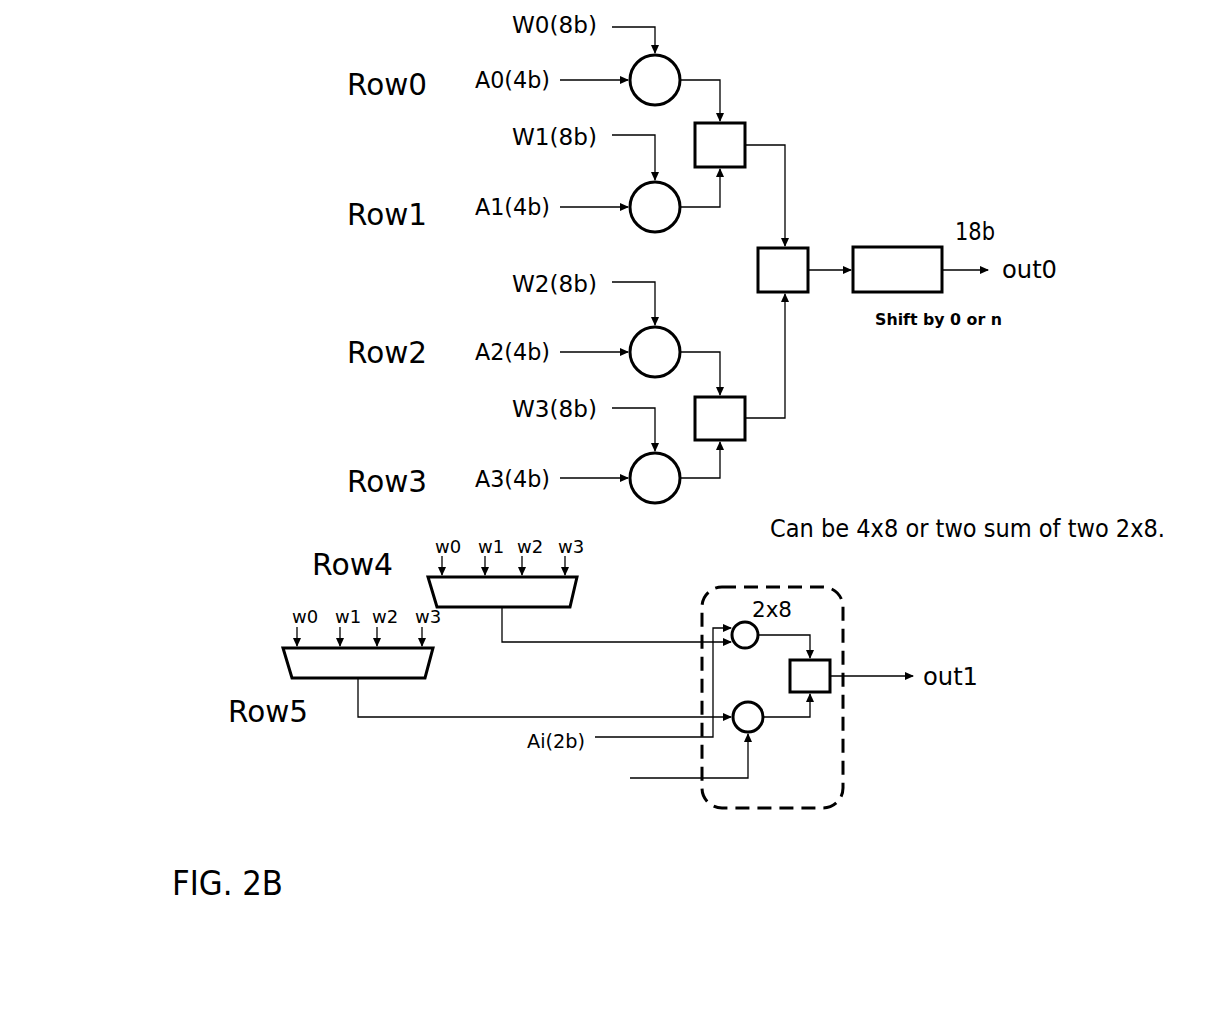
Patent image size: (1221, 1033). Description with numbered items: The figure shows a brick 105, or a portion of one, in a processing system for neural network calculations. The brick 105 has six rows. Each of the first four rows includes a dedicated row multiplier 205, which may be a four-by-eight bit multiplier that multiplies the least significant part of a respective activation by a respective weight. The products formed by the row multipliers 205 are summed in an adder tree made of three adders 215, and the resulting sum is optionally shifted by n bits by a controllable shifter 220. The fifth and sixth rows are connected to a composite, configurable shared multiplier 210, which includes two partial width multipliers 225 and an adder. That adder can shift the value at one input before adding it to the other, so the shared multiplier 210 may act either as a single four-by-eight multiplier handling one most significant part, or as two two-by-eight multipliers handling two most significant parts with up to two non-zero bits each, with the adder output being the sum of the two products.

The brick 105 is at (947, 100).
The row multiplier 205 is at (677, 65).
The adder 215 is at (745, 133).
The controllable shifter 220 is at (908, 247).
The shared multiplier 210 is at (843, 770).
The partial width multiplier 225 is at (750, 648).